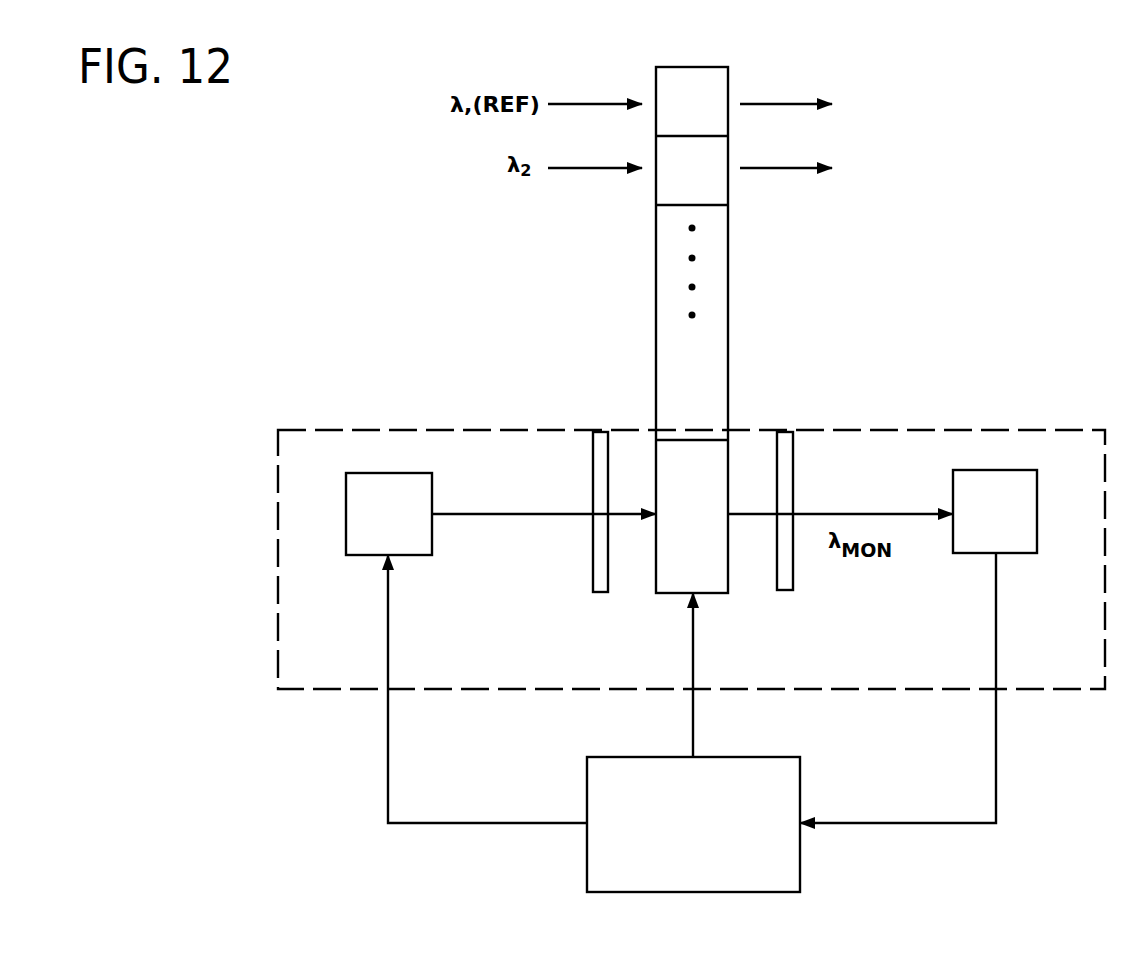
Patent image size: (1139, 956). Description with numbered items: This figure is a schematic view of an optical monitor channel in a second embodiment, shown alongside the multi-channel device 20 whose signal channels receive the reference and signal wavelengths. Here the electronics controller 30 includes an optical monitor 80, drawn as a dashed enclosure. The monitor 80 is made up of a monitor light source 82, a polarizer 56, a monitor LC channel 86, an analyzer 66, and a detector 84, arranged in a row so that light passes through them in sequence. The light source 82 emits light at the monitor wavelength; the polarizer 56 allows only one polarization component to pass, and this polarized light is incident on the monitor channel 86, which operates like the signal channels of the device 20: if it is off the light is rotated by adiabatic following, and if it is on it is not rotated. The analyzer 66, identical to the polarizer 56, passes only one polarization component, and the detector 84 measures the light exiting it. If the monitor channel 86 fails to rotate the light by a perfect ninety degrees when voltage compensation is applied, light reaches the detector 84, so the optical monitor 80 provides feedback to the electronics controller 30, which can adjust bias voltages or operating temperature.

The multi-section optical filter / etalon array 20 is at (703, 67).
The electronics controller 30 is at (693, 824).
The polarizer 56 is at (593, 460).
The analyzer 66 is at (793, 460).
The optical monitor 80 is at (278, 432).
The monitor light source 82 is at (388, 473).
The detector 84 is at (996, 470).
The monitor LC channel 86 is at (713, 577).